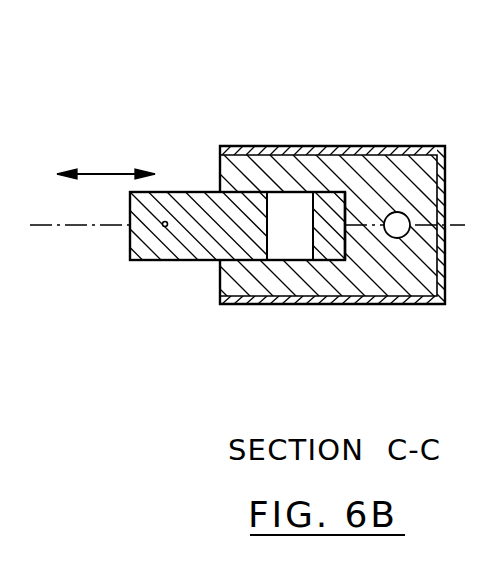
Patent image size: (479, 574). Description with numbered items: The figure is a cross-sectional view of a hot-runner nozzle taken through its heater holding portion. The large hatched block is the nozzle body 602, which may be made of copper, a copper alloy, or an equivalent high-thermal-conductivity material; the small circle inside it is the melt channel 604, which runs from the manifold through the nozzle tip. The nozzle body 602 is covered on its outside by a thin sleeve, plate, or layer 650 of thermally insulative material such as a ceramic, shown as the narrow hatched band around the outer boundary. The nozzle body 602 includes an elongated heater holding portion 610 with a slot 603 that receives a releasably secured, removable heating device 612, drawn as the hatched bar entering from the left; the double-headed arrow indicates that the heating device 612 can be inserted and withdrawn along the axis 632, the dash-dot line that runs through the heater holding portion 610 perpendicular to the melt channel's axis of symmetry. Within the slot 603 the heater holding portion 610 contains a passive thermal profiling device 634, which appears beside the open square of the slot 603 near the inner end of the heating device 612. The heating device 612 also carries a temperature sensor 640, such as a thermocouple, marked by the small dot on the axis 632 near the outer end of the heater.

The nozzle body 602 is at (360, 185).
The slot 603 is at (293, 242).
The melt channel 604 is at (400, 214).
The heater holding portion 610 is at (300, 173).
The heating device 612 is at (188, 208).
The axis 632 is at (65, 228).
The passive thermal profiling device 634 is at (325, 242).
The temperature sensor 640 is at (165, 228).
The layer 650 is at (258, 152).